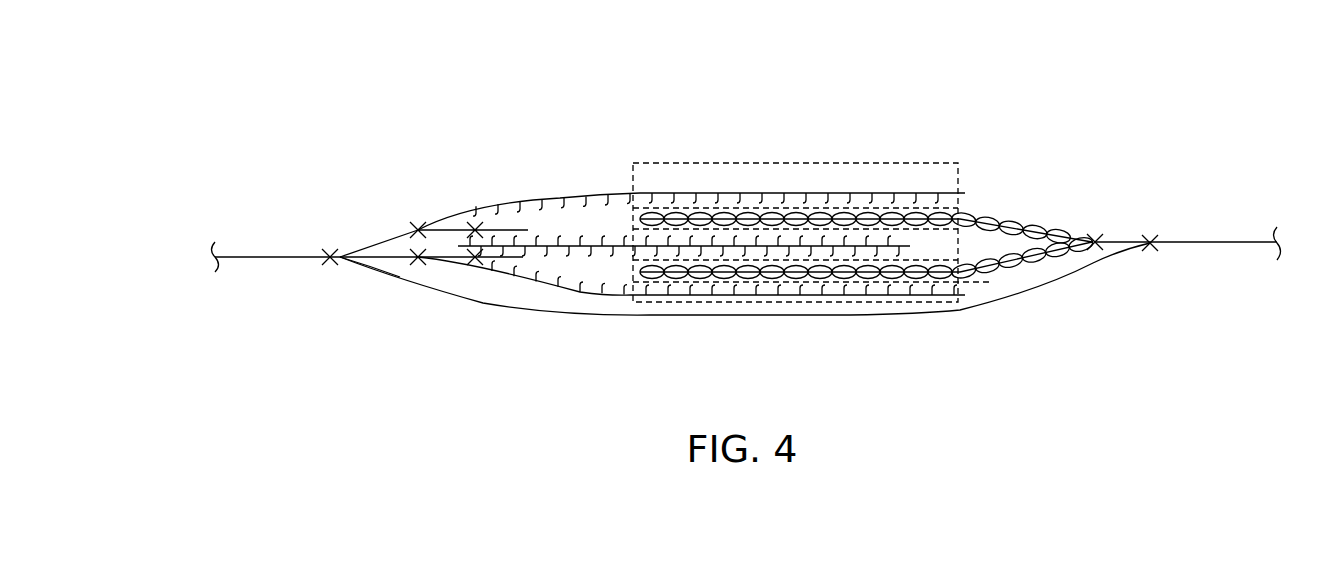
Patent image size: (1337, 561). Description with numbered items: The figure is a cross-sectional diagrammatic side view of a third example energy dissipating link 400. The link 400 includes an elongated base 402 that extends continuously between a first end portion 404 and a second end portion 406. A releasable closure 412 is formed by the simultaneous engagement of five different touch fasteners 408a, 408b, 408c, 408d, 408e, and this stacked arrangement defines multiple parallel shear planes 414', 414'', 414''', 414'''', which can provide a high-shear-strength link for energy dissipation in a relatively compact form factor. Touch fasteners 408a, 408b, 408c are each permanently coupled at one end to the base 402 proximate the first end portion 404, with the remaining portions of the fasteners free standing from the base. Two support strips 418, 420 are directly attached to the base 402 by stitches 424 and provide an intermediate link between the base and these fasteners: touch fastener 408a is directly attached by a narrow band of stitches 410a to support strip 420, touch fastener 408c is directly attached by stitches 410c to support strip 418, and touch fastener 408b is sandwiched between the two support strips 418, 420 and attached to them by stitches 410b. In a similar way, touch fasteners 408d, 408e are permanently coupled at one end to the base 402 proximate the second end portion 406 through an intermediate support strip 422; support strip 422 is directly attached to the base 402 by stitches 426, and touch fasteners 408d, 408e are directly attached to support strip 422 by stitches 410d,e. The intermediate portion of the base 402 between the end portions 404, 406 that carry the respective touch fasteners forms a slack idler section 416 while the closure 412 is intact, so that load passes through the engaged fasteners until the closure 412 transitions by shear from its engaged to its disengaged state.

The energy dissipating link 400 is at (370, 102).
The elongated base 402 is at (277, 257).
The first end portion 404 is at (210, 250).
The second end portion 406 is at (1278, 235).
The touch fastener 408a is at (583, 192).
The touch fastener 408b is at (541, 242).
The touch fastener 408c is at (550, 292).
The touch fastener 408d is at (983, 212).
The touch fastener 408e is at (1017, 273).
The stitches 410a is at (424, 225).
The stitches 410b is at (482, 258).
The stitches 410c is at (430, 263).
The stitches 410d,e is at (1102, 240).
The releasable closure 412 is at (688, 160).
The shear plane 414' is at (795, 162).
The shear plane 414'' is at (795, 168).
The shear plane 414''' is at (795, 312).
The shear plane 414'''' is at (812, 332).
The slack idler section 416 is at (643, 315).
The support strip 418 is at (377, 262).
The support strip 420 is at (380, 243).
The support strip 422 is at (1123, 242).
The stitches 424 is at (325, 268).
The stitches 426 is at (1143, 250).